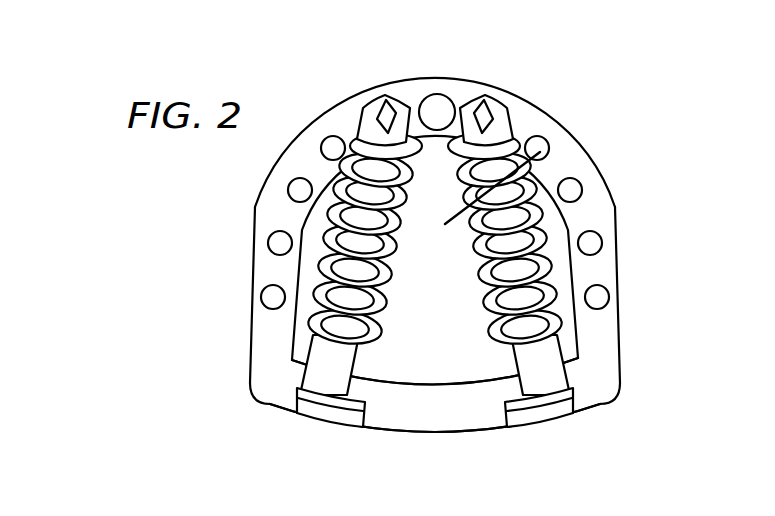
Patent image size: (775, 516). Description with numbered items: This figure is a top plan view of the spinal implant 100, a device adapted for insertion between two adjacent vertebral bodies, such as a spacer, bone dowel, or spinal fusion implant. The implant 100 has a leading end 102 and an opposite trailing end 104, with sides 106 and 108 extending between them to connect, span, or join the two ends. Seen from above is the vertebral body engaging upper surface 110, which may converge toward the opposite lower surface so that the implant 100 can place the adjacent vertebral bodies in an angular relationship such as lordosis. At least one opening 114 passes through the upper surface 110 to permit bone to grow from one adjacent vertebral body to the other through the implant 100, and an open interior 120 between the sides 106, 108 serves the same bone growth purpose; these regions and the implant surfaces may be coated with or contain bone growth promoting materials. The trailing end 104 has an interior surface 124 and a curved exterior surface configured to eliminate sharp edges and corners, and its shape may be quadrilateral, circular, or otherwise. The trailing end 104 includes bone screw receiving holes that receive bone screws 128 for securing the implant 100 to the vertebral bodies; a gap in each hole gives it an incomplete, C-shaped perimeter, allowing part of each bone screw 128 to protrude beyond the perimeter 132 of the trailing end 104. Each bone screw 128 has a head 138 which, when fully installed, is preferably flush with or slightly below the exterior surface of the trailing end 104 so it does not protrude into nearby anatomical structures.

The spinal implant 100 is at (160, 363).
The leading end 102 is at (407, 78).
The trailing end 104 is at (463, 433).
The side 106 is at (249, 250).
The side 108 is at (621, 250).
The upper surface 110 is at (448, 92).
The opening 114 is at (532, 142).
The open interior 120 is at (447, 223).
The interior surface 124 is at (409, 385).
The bone screw 128 is at (313, 228).
The perimeter 132 is at (413, 407).
The head 138 is at (327, 412).